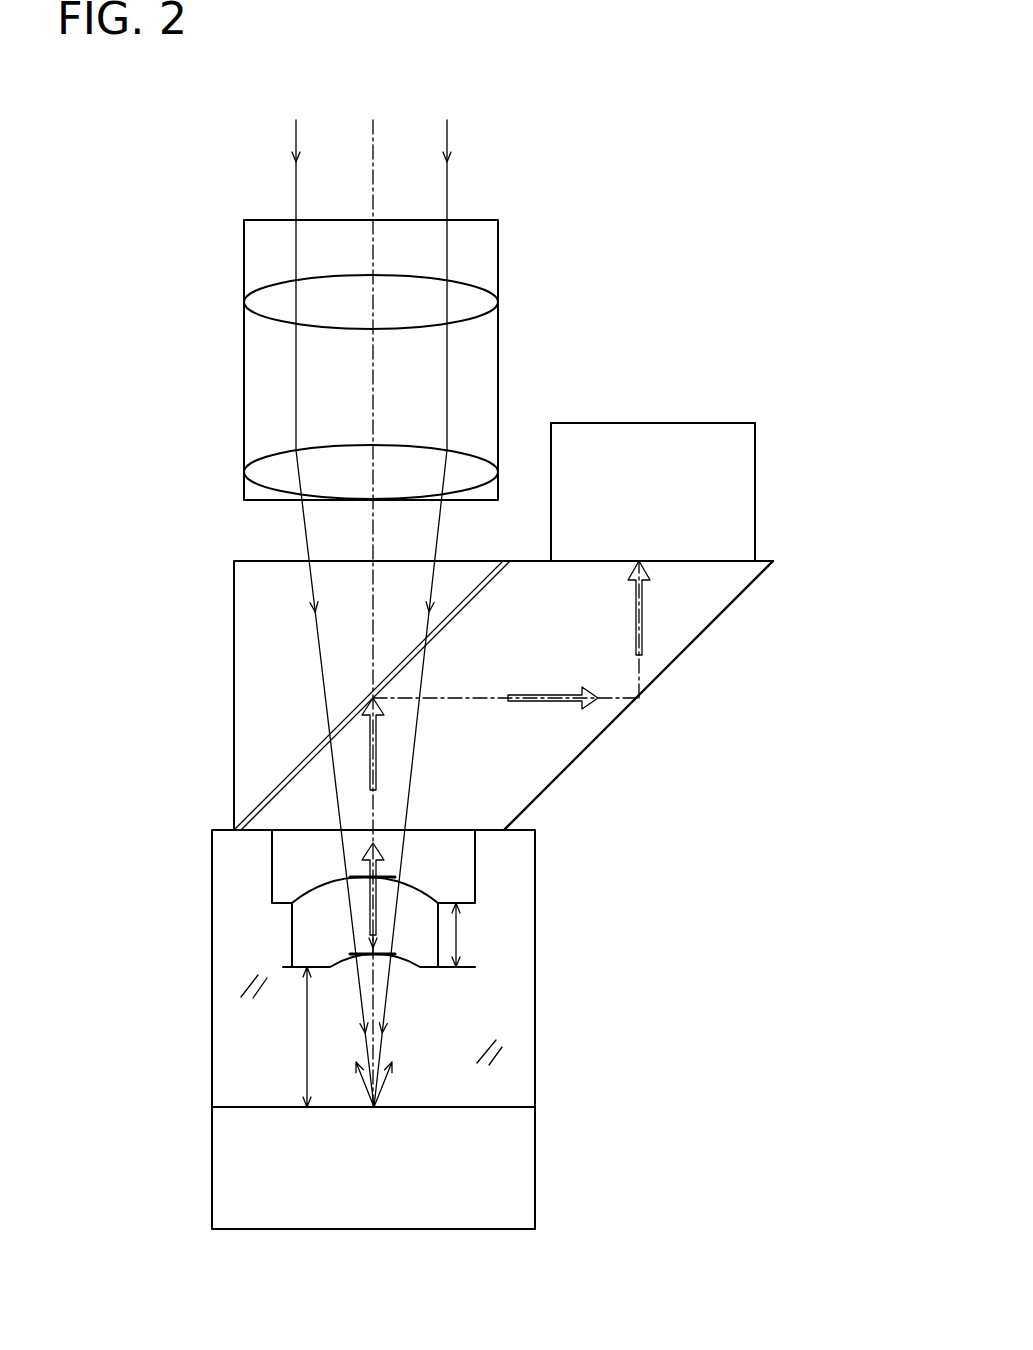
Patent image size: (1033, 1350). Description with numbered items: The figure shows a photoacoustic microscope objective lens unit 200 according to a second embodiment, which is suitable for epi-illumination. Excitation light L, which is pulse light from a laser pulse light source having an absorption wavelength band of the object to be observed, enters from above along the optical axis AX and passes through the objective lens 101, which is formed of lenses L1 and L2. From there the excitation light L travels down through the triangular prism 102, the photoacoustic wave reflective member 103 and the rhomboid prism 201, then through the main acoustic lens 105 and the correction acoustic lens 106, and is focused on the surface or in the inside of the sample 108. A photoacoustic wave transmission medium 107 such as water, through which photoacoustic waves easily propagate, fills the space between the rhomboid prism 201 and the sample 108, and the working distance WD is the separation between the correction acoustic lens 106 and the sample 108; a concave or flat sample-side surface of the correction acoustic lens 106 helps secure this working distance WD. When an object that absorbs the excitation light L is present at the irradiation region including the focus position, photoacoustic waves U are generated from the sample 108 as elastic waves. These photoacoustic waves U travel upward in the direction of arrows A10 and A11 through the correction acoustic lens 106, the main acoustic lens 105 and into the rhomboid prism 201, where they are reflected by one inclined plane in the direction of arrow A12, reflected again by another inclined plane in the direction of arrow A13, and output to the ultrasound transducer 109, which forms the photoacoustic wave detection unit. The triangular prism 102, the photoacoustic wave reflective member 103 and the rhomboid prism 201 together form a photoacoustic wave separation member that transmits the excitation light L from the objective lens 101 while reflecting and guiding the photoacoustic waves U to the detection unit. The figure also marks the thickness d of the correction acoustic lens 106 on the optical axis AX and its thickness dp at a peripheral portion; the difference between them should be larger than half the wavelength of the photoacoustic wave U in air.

The photoacoustic microscope objective lens unit 200 is at (563, 130).
The excitation light L is at (296, 190).
The objective lens 101 is at (498, 265).
The lens L1 is at (270, 296).
The lens L2 is at (270, 468).
The optical axis AX is at (373, 377).
The ultrasound transducer 109 is at (755, 491).
The triangular prism 102 is at (234, 620).
The photoacoustic wave reflective member 103 is at (275, 790).
The rhomboid prism 201 is at (614, 722).
The arrow A10 is at (366, 905).
The arrow A11 is at (380, 760).
The arrow A12 is at (545, 702).
The arrow A13 is at (642, 612).
The main acoustic lens 105 is at (272, 876).
The correction acoustic lens 106 is at (296, 942).
The thickness at peripheral portion dp is at (460, 936).
The thickness on optical axis d is at (378, 937).
The photoacoustic wave transmission medium 107 is at (212, 1063).
The sample 108 is at (212, 1172).
The working distance WD is at (307, 1040).
The photoacoustic waves U is at (365, 1092).